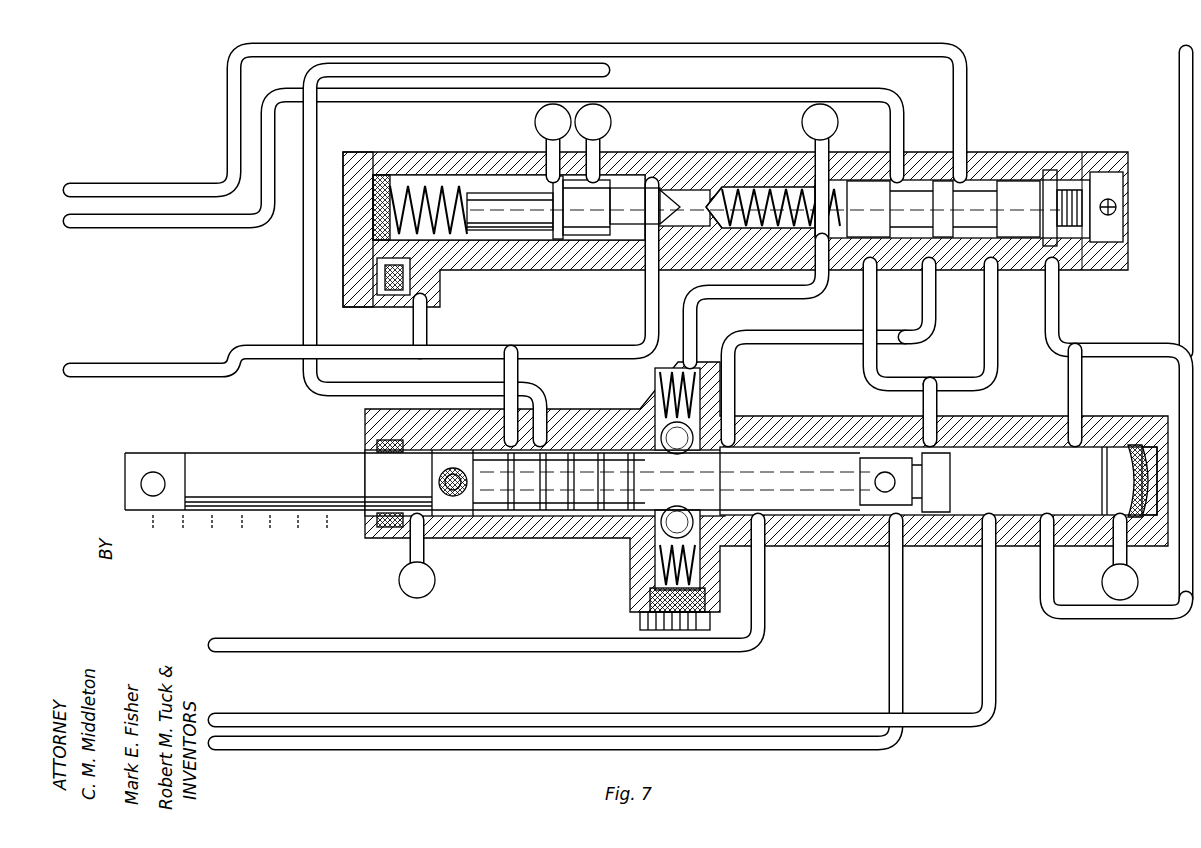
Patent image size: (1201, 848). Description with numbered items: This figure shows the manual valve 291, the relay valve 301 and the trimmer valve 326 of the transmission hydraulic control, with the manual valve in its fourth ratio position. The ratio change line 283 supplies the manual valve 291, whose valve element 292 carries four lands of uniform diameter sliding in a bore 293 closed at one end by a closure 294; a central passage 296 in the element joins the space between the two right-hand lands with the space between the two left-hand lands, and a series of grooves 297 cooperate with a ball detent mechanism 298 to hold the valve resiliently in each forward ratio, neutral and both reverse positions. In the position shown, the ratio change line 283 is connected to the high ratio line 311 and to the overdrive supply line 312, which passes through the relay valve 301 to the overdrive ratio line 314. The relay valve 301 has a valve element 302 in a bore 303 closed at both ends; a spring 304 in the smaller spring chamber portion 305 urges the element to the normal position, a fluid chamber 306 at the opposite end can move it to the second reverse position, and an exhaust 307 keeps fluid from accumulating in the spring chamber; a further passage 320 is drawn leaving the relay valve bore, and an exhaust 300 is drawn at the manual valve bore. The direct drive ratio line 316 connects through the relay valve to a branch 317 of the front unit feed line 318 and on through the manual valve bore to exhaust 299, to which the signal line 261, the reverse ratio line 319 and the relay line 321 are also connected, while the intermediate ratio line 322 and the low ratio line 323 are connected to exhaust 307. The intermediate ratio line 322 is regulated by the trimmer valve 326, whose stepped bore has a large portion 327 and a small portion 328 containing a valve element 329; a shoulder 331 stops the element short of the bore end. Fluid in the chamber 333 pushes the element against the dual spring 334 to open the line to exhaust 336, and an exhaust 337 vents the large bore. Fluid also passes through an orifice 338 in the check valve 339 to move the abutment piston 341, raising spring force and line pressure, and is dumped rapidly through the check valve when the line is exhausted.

The signal line 261 is at (236, 714).
The ratio change line 283 is at (246, 748).
The manual valve 291 is at (512, 545).
The valve element 292 is at (290, 465).
The bore 293 is at (1040, 548).
The closure 294 is at (1152, 432).
The central passage 296 is at (442, 488).
The grooves 297 is at (605, 512).
The ball detent mechanism 298 is at (668, 530).
The exhaust 299 is at (1102, 584).
The exhaust port 300 is at (400, 592).
The relay valve 301 is at (1110, 152).
The valve element 302 is at (936, 262).
The bore 303 is at (912, 182).
The spring 304 is at (735, 180).
The spring chamber portion 305 is at (775, 185).
The fluid chamber 306 is at (1052, 170).
The exhaust 307 is at (802, 122).
The high ratio line 311 is at (258, 640).
The overdrive supply line 312 is at (738, 370).
The overdrive ratio line 314 is at (92, 230).
The direct drive ratio line 316 is at (90, 185).
The branch 317 is at (996, 292).
The front unit feed line 318 is at (938, 408).
The reverse ratio line 319 is at (1180, 60).
The pipe 320 is at (864, 312).
The relay line 321 is at (1088, 342).
The intermediate ratio line 322 is at (96, 362).
The low ratio line 323 is at (614, 70).
The trimmer valve 326 is at (420, 150).
The large portion 327 is at (462, 242).
The small portion 328 is at (650, 176).
The valve element 329 is at (570, 242).
The shoulder 331 is at (548, 235).
The chamber 333 is at (600, 237).
The dual spring 334 is at (390, 245).
The exhaust 336 is at (610, 114).
The exhaust 337 is at (535, 122).
The orifice 338 is at (392, 292).
The check valve 339 is at (426, 308).
The abutment piston 341 is at (365, 160).